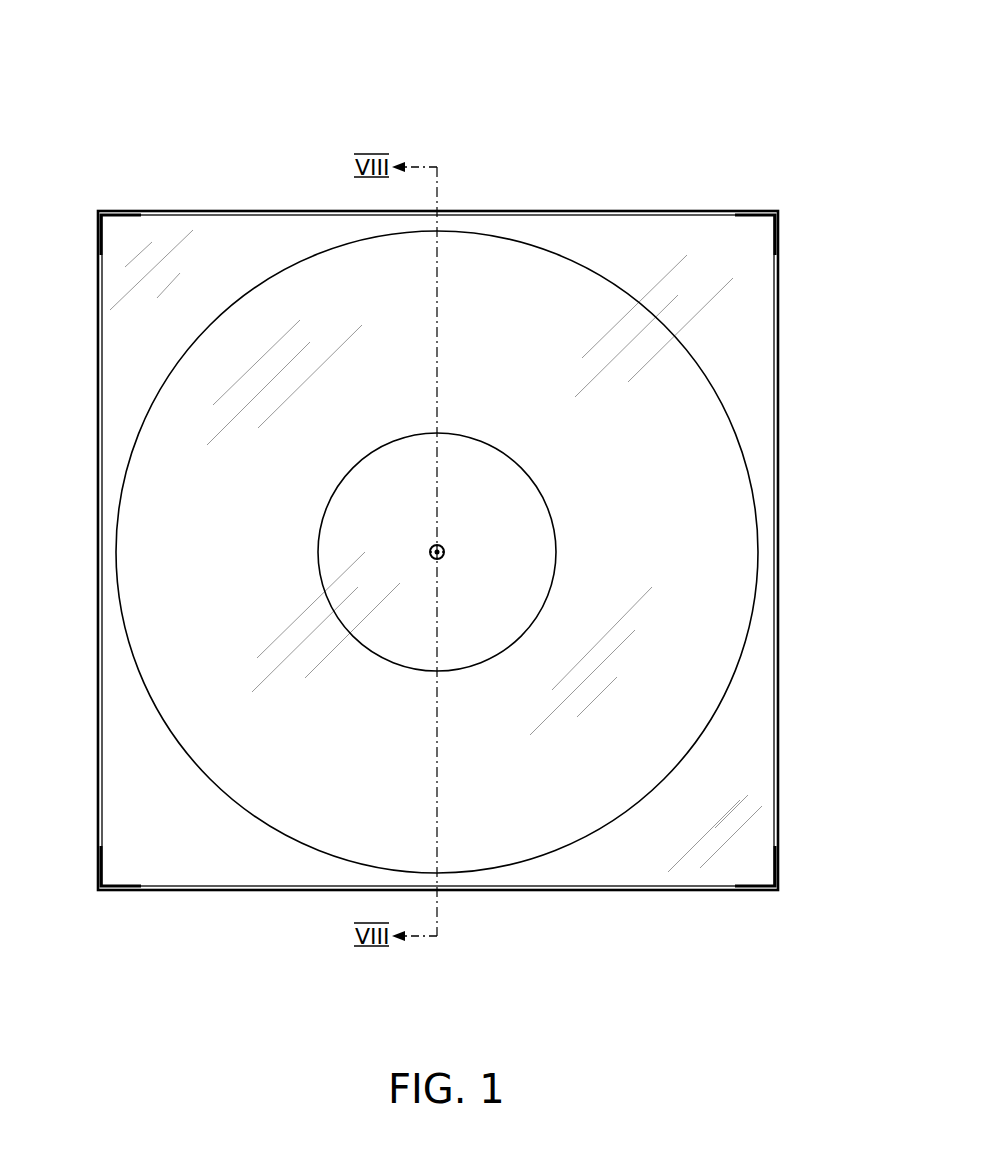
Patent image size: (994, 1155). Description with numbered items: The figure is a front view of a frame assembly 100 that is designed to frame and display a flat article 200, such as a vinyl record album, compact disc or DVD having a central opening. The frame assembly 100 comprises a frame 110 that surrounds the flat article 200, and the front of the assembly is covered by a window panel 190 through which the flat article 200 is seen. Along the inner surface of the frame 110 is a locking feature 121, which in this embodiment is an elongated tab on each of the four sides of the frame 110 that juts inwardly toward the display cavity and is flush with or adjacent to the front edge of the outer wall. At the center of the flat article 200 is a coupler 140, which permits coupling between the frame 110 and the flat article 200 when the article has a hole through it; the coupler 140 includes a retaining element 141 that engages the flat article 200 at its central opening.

The frame assembly 100 is at (157, 124).
The frame 110 is at (775, 211).
The locking feature 121 is at (270, 211).
The window panel 190 is at (713, 235).
The flat article 200 is at (720, 503).
The coupler 140 is at (455, 571).
The retaining element 141 is at (444, 557).